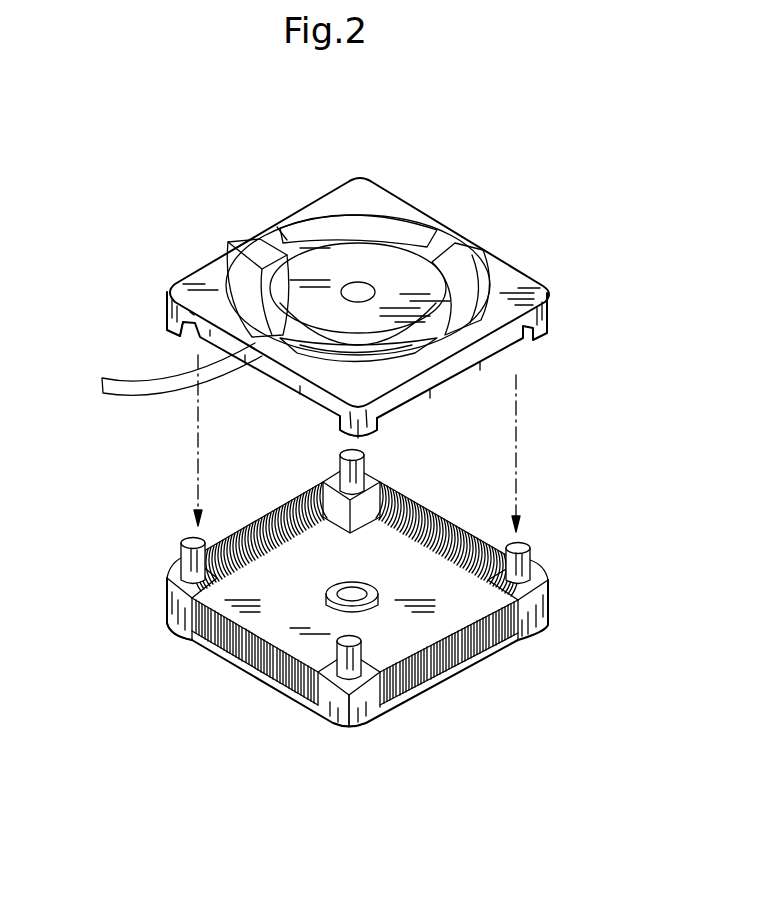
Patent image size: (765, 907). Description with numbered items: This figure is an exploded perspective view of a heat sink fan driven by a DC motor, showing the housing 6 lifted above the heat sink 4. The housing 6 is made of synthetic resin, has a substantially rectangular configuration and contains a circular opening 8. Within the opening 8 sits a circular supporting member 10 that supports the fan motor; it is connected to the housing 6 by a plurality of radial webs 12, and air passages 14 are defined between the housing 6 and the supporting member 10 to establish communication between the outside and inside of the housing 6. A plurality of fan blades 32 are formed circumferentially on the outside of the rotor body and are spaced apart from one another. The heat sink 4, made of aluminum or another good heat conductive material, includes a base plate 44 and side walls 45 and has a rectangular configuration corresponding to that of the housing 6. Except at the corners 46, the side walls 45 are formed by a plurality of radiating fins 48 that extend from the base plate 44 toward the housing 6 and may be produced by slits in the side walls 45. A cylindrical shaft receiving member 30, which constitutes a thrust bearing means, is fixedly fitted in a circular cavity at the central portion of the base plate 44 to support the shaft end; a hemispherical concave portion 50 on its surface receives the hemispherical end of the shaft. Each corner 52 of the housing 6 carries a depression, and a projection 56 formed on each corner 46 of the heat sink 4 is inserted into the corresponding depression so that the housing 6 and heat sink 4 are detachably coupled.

The heat sink 4 is at (353, 608).
The housing 6 is at (307, 198).
The circular opening 8 is at (388, 226).
The circular supporting member 10 is at (357, 252).
The radial webs 12 is at (285, 232).
The air passages 14 is at (230, 302).
The shaft receiving member 30 is at (350, 602).
The fan blades 32 is at (460, 303).
The base plate 44 is at (423, 623).
The side walls 45 is at (345, 705).
The corners 46 is at (167, 607).
The radiating fins 48 is at (437, 523).
The hemispherical concave portion 50 is at (352, 585).
The corners 52 is at (167, 318).
The projection 56 is at (182, 556).